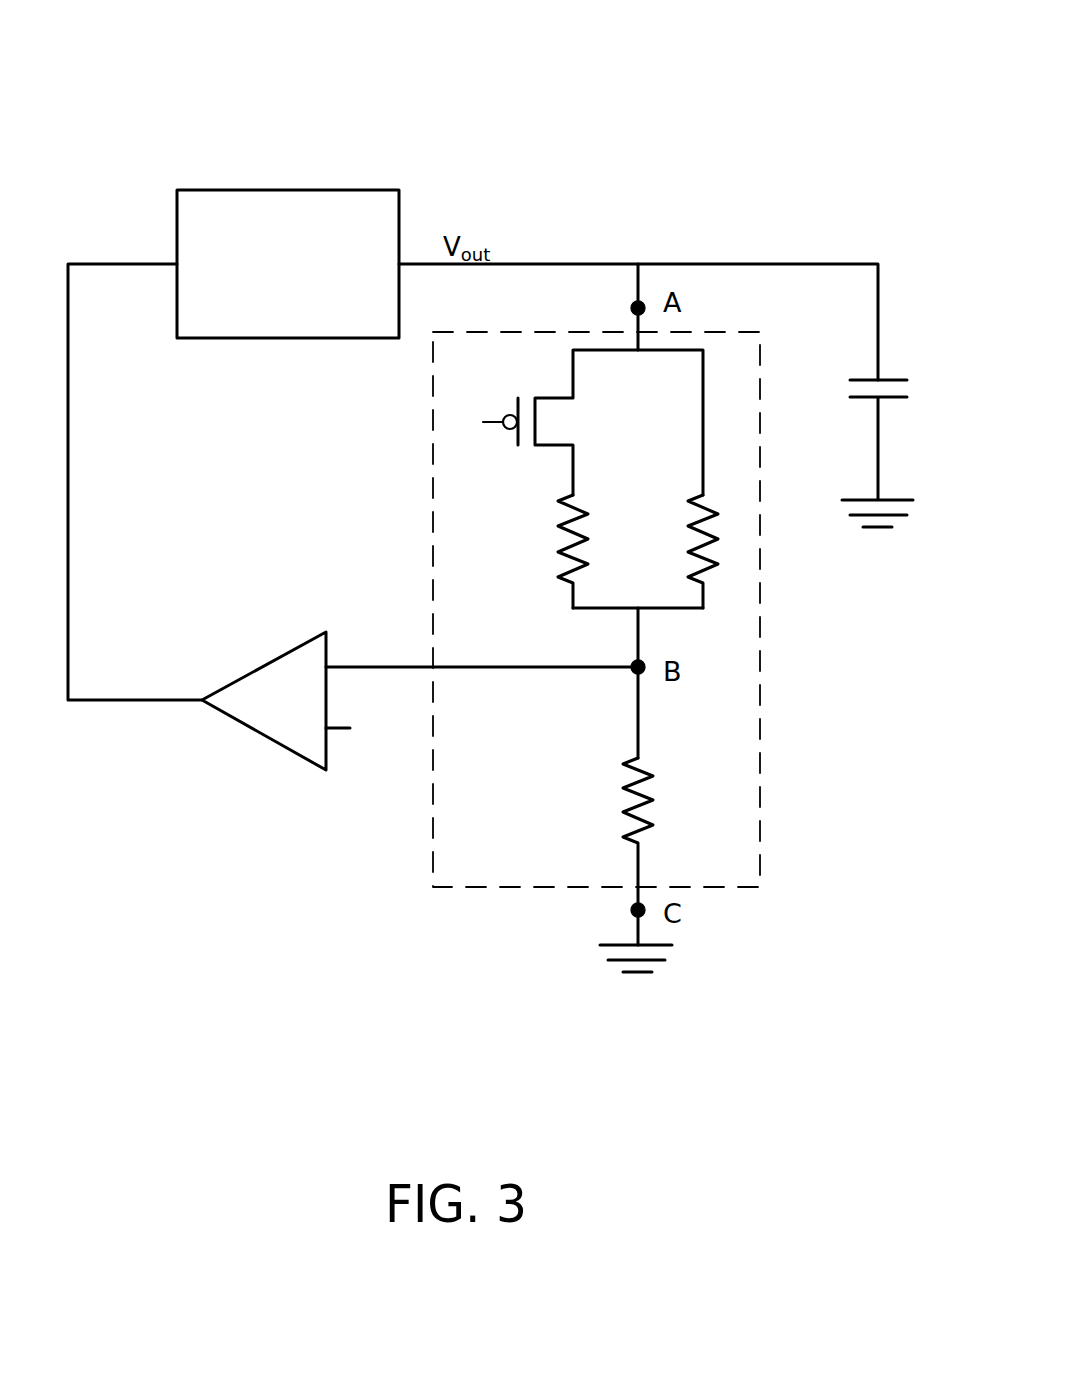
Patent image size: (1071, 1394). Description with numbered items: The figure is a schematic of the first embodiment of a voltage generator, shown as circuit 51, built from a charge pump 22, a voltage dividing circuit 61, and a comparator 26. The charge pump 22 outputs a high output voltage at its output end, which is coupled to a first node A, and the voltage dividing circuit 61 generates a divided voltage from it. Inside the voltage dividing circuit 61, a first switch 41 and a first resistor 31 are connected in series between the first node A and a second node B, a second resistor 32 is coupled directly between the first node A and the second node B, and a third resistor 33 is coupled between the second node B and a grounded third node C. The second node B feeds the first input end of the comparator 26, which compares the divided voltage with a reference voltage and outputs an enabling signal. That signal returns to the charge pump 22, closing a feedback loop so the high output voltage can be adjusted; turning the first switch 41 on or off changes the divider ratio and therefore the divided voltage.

The charge pump 22 is at (370, 190).
The comparator 26 is at (265, 663).
The first resistor 31 is at (553, 537).
The second resistor 32 is at (727, 537).
The third resistor 33 is at (657, 797).
The first switch 41 is at (522, 450).
The voltage regulating circuit 51 is at (763, 95).
The voltage dividing circuit 61 is at (760, 390).